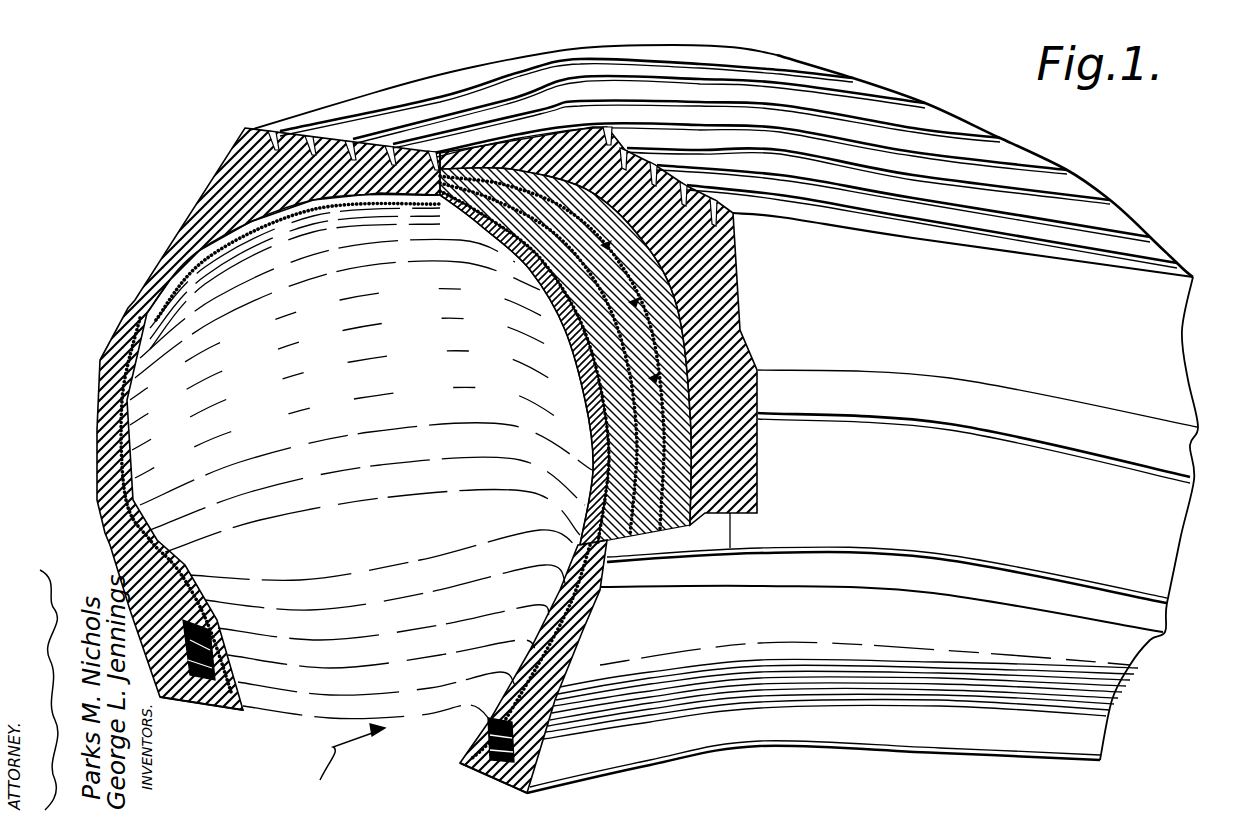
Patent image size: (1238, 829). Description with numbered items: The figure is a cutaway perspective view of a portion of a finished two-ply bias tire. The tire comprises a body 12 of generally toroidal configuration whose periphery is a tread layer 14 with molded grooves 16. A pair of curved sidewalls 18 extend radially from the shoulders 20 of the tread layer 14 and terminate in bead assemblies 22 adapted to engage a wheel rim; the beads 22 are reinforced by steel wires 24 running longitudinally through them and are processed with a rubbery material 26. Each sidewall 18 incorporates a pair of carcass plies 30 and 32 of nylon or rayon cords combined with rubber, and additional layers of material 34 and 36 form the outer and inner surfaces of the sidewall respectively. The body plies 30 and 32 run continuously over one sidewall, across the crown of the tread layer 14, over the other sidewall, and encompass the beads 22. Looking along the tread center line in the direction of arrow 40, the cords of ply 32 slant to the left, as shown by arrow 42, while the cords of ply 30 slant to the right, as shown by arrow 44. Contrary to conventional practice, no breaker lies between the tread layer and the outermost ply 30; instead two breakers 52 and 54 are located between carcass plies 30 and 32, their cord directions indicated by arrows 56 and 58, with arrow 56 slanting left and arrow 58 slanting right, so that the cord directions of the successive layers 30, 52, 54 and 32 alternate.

The body 12 is at (1185, 354).
The tread layer 14 is at (1020, 128).
The grooves 16 is at (1063, 170).
The sidewalls 18 is at (1185, 541).
The shoulders 20 is at (242, 130).
The bead assemblies 22 is at (227, 713).
The steel wires 24 is at (213, 667).
The rubbery material 26 is at (200, 617).
The carcass ply 30 is at (730, 525).
The carcass ply 32 is at (653, 525).
The outer layer of material 34 is at (757, 502).
The inner layer of material 36 is at (387, 215).
The arrow 40 is at (352, 761).
The arrow 42 is at (600, 397).
The arrow 44 is at (735, 452).
The breaker 52 is at (583, 233).
The breaker 54 is at (487, 190).
The arrow 56 is at (733, 246).
The arrow 58 is at (600, 322).